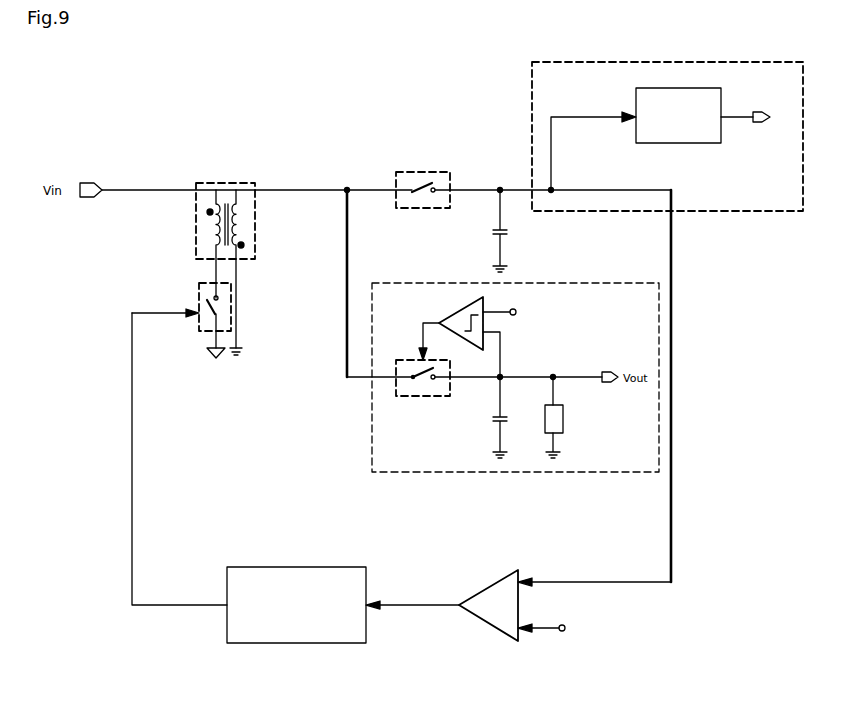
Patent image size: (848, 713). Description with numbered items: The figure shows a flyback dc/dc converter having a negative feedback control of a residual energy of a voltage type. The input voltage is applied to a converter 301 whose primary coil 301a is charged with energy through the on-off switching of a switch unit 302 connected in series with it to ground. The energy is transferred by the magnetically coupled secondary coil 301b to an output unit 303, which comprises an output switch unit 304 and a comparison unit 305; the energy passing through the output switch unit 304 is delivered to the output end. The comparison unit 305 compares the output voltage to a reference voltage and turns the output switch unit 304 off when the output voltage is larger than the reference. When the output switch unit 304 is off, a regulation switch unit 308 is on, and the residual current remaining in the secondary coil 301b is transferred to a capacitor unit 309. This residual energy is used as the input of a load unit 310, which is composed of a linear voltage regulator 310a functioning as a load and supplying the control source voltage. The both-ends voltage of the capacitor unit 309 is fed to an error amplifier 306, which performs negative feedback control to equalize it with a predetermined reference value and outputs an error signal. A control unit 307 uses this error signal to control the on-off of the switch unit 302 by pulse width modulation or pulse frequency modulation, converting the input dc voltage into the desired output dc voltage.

The converter 301 is at (227, 241).
The primary coil 301a is at (212, 226).
The secondary coil 301b is at (243, 226).
The switch unit 302 is at (198, 327).
The output unit 303 is at (588, 283).
The output switch unit 304 is at (423, 397).
The comparison unit 305 is at (463, 305).
The error amplifier 306 is at (488, 625).
The control unit 307 is at (300, 647).
The regulation switch unit 308 is at (423, 170).
The capacitor unit 309 is at (493, 235).
The load unit 310 is at (667, 163).
The linear voltage regulator 310a is at (680, 145).